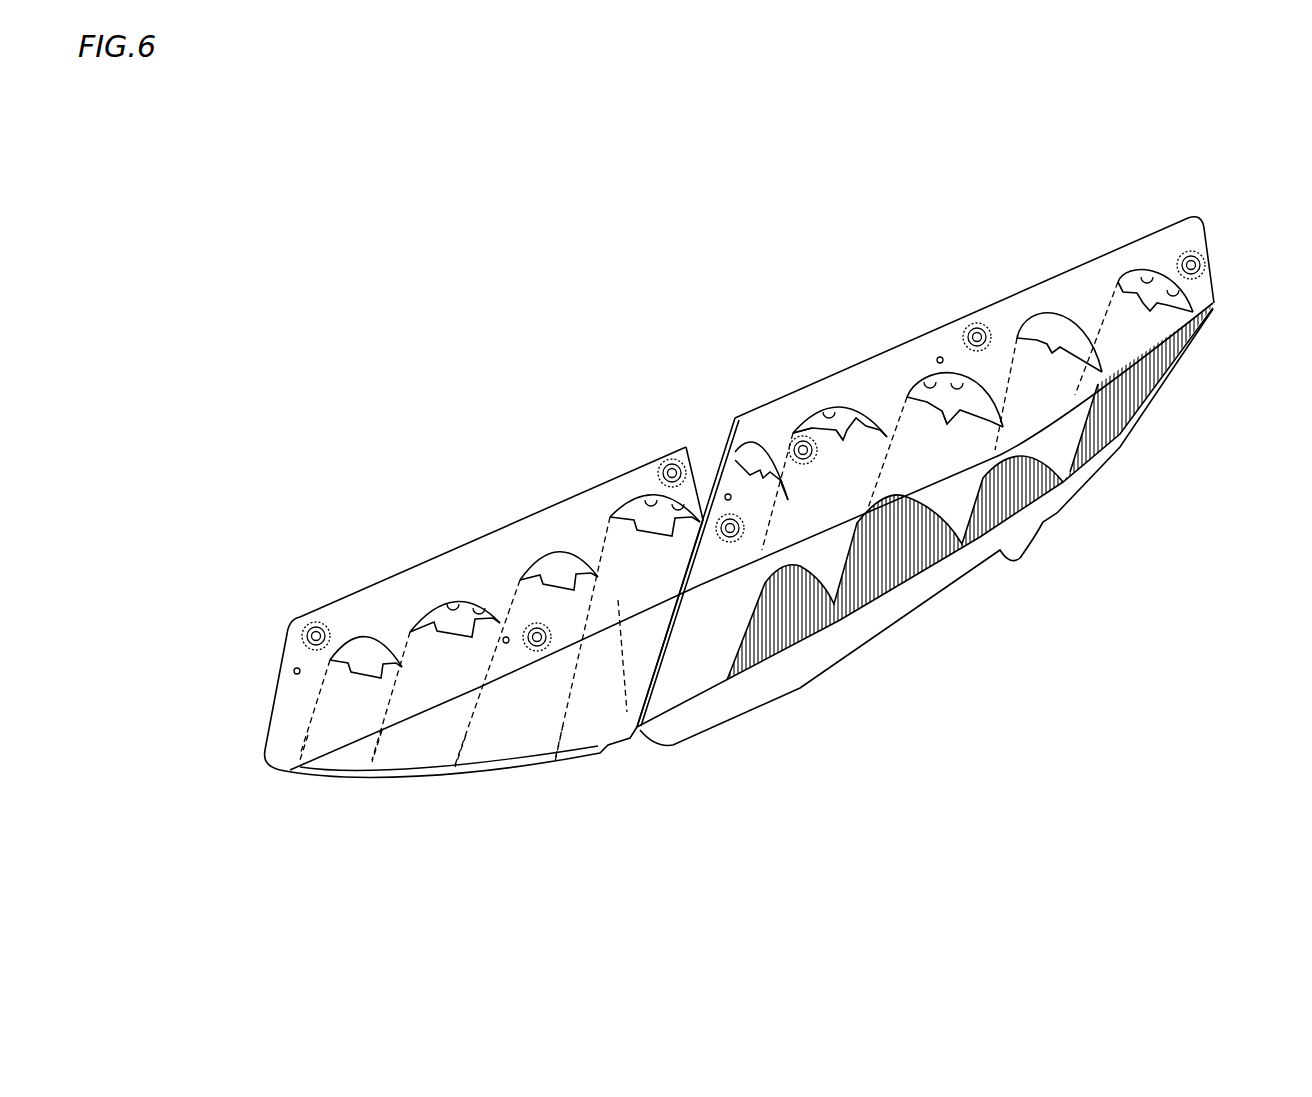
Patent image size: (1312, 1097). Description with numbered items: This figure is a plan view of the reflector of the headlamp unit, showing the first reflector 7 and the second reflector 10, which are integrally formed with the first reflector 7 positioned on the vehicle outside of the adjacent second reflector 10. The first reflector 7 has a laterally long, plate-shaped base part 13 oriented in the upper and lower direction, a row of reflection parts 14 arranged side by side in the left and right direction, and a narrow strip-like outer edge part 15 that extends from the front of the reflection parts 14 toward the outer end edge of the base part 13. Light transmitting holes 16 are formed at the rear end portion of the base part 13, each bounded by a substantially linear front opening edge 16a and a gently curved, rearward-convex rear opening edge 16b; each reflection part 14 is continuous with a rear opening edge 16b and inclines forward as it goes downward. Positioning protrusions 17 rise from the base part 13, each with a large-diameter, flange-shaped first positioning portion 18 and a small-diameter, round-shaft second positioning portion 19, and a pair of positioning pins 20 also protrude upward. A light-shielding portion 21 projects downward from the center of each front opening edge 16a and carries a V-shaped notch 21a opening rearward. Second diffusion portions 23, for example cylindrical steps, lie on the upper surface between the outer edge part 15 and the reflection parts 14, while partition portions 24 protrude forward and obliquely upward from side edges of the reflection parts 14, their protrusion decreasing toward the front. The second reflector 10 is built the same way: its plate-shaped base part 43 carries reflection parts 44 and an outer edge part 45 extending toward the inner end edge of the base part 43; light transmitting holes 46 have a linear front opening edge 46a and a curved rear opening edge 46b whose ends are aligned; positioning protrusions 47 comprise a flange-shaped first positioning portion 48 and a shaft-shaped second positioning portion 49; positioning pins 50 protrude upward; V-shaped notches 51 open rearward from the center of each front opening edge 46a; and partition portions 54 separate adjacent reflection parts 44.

The first reflector 7 is at (1055, 273).
The second reflector 10 is at (503, 523).
The base part 13 is at (1030, 290).
The reflection part 14 is at (1060, 447).
The outer edge part 15 is at (978, 573).
The light transmitting hole 16 is at (920, 380).
The front opening edge 16a is at (920, 387).
The rear opening edge 16b is at (950, 380).
The positioning protrusion 17 is at (722, 518).
The first positioning portion 18 is at (793, 440).
The second positioning portion 19 is at (803, 436).
The positioning pin 20 is at (727, 493).
The light-shielding portion 21 is at (857, 430).
The notch 21a is at (843, 440).
The second diffusion portion 23 is at (1158, 388).
The partition portion 24 is at (1110, 442).
The base part 43 is at (398, 580).
The reflection part 44 is at (580, 727).
The outer edge part 45 is at (500, 778).
The light transmitting hole 46 is at (442, 595).
The front opening edge 46a is at (417, 627).
The rear opening edge 46b is at (463, 605).
The positioning protrusion 47 is at (312, 623).
The first positioning portion 48 is at (326, 623).
The second positioning portion 49 is at (298, 617).
The positioning pin 50 is at (294, 671).
The notch 51 is at (362, 672).
The partition portion 54 is at (373, 760).